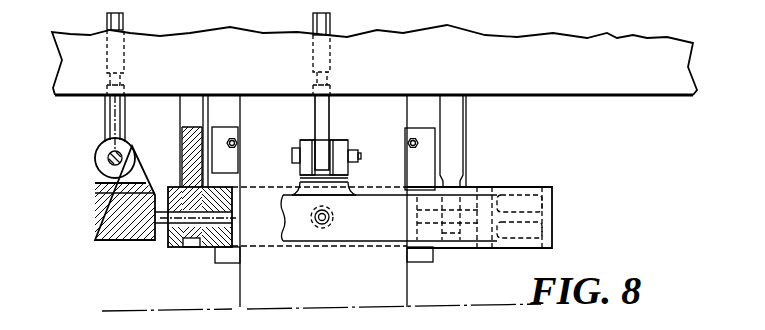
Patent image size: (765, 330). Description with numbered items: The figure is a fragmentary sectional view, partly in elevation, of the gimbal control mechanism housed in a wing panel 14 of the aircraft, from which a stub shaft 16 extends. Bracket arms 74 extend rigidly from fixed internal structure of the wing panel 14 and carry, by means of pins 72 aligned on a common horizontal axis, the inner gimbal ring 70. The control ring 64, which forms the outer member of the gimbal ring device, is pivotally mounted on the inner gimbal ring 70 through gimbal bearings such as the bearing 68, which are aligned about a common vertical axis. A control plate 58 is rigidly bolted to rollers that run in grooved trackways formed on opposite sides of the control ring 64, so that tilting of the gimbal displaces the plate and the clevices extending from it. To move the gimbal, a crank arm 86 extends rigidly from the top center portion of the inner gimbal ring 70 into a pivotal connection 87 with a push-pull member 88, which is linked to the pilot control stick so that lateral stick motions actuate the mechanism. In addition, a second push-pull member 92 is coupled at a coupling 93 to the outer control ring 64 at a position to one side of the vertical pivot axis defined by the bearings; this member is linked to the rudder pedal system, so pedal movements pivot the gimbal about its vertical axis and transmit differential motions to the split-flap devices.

The wing panel 14 is at (177, 71).
The stub shaft 16 is at (408, 272).
The control plate 58 is at (440, 148).
The control ring 64 is at (553, 215).
The gimbal bearing 68 is at (323, 225).
The inner gimbal ring 70 is at (178, 247).
The pin 72 is at (177, 183).
The bracket arm 74 is at (180, 115).
The crank arm 86 is at (350, 182).
The pivotal connection 87 is at (296, 156).
The push-pull member 88 is at (330, 108).
The push-pull member 92 is at (105, 108).
The coupling 93 is at (97, 146).